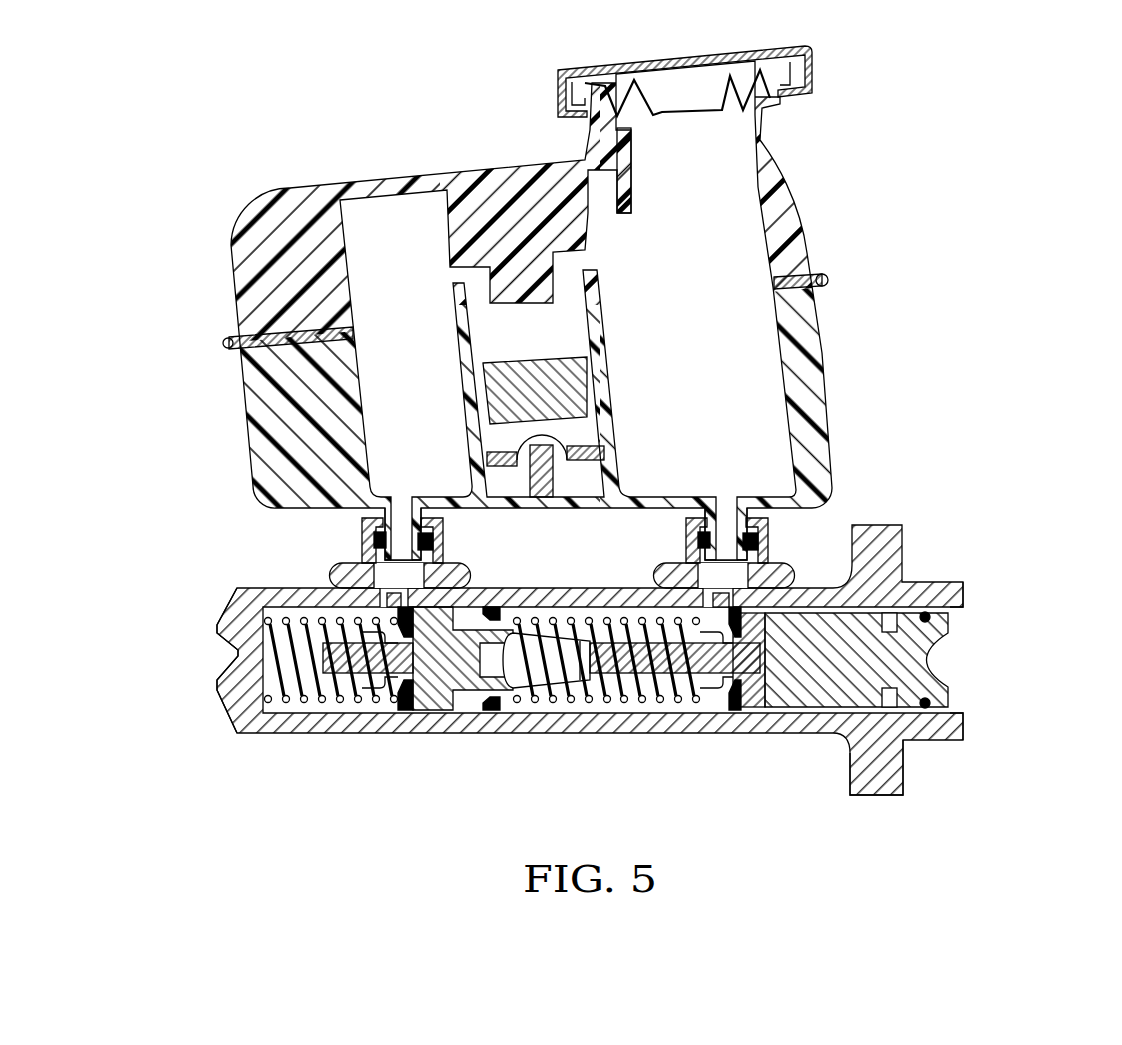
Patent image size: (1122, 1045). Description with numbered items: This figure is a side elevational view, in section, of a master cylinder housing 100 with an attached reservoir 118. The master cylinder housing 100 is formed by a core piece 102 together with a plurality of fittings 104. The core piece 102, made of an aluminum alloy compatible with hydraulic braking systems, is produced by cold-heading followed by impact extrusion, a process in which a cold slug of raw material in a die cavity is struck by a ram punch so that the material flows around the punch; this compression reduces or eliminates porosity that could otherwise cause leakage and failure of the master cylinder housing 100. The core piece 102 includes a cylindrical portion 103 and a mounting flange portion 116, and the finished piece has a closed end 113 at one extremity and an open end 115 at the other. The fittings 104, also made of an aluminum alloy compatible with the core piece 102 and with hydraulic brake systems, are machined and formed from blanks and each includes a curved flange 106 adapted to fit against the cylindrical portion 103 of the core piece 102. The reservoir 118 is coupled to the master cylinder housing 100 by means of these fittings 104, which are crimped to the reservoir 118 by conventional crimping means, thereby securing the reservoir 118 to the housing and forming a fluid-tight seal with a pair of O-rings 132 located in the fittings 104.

The master cylinder housing 100 is at (158, 580).
The core piece 102 is at (475, 765).
The cylindrical portion 103 is at (700, 733).
The fittings 104 is at (447, 542).
The curved flange 106 is at (343, 566).
The closed end 113 is at (217, 688).
The open end 115 is at (988, 648).
The mounting flange portion 116 is at (873, 797).
The reservoir 118 is at (800, 207).
The O-rings 132 is at (363, 538).